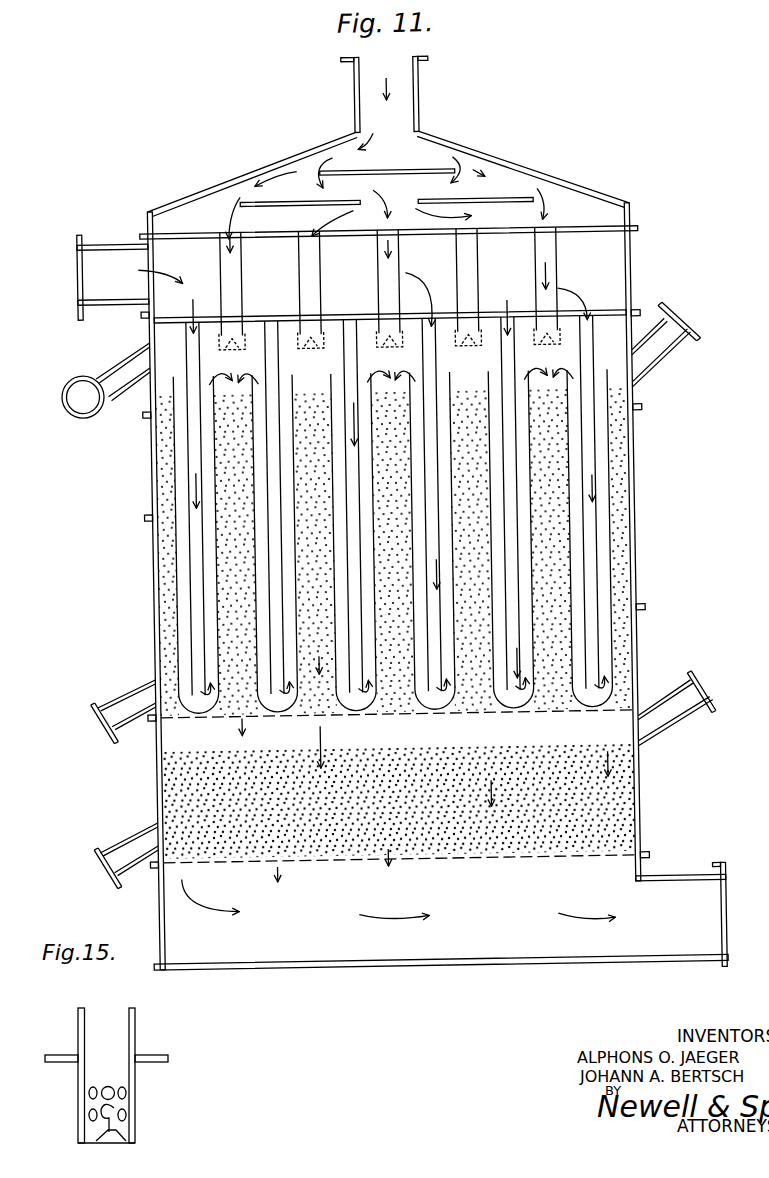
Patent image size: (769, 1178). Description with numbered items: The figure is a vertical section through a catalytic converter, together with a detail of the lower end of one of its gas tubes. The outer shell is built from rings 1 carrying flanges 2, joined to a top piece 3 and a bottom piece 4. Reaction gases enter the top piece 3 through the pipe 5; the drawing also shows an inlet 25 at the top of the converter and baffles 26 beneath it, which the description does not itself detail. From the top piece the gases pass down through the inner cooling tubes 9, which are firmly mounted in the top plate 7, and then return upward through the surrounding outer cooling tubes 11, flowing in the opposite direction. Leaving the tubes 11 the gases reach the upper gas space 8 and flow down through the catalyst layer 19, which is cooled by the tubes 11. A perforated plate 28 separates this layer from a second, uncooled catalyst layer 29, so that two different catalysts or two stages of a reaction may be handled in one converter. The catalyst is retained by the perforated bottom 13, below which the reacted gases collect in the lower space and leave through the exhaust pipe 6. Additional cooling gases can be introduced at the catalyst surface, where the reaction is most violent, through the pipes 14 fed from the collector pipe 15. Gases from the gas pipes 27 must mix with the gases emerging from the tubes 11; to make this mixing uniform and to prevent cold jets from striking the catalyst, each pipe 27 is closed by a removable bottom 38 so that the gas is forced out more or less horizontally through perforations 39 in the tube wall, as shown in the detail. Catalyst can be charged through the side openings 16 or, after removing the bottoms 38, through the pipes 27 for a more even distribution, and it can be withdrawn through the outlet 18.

In FIG. 11, the ring 1 is at (637, 256).
In FIG. 11, the flange 2 is at (645, 233).
In FIG. 11, the top piece 3 is at (200, 258).
In FIG. 11, the bottom piece 4 is at (396, 966).
In FIG. 11, the pipe 5 is at (113, 277).
In FIG. 11, the exhaust pipe 6 is at (682, 915).
In FIG. 11, the top plate 7 is at (170, 314).
In FIG. 15, the top plate 7 is at (160, 1055).
In FIG. 11, the upper gas space 8 is at (302, 338).
In FIG. 11, the inner cooling tube 9 is at (190, 348).
In FIG. 11, the outer cooling tube 11 is at (177, 446).
In FIG. 11, the perforated bottom 13 is at (432, 860).
In FIG. 11, the pipe 14 is at (124, 368).
In FIG. 11, the collector pipe 15 is at (65, 392).
In FIG. 11, the side opening 16 is at (689, 322).
In FIG. 11, the outlet 18 is at (130, 690).
In FIG. 11, the catalyst layer 19 is at (159, 568).
In FIG. 11, the gas inlet 25 is at (427, 97).
In FIG. 11, the baffle 26 is at (254, 200).
In FIG. 11, the gas pipe 27 is at (247, 264).
In FIG. 15, the gas pipe 27 is at (78, 1019).
In FIG. 11, the perforated plate 28 is at (165, 716).
In FIG. 11, the catalyst layer 29 is at (164, 794).
In FIG. 15, the removable bottom 38 is at (128, 1126).
In FIG. 15, the perforation 39 is at (130, 1095).